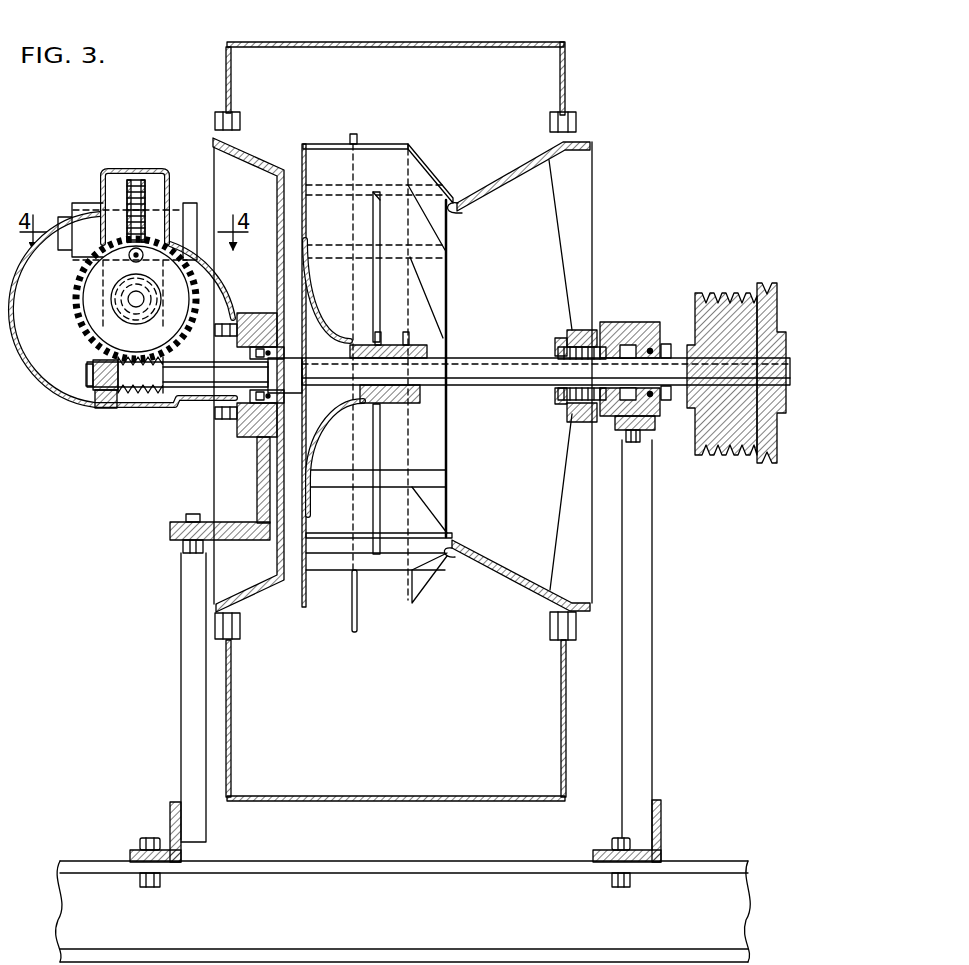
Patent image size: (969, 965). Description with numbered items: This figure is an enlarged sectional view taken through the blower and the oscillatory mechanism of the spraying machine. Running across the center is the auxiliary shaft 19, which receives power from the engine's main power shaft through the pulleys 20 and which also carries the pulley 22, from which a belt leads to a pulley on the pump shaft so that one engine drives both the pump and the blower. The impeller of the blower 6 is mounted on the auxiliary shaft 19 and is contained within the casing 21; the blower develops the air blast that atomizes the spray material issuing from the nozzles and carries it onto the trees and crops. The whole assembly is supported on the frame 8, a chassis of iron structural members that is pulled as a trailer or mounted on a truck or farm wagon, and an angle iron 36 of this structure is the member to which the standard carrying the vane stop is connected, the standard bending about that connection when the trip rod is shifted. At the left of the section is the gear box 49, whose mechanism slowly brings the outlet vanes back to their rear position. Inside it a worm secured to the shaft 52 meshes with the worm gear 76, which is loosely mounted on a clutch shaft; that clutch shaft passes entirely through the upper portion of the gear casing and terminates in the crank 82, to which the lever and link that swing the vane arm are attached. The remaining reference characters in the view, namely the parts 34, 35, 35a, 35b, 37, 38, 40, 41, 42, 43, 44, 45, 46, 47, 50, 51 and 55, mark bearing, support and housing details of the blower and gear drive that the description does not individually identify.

The blower 6 is at (564, 44).
The frame 8 is at (560, 871).
The auxiliary shaft 19 is at (526, 372).
The pulleys 20 is at (713, 293).
The casing 21 is at (566, 89).
The pulley 22 is at (767, 284).
The bearing 34 is at (246, 314).
The support bracket 35 is at (170, 532).
The hub plate 35a is at (430, 353).
The hub plate 35b is at (427, 341).
The angle iron 36 is at (170, 816).
The inlet ring 37 is at (325, 313).
The fan housing wall 38 is at (301, 168).
The inlet flange 40 is at (458, 199).
The lower cone 41 is at (517, 576).
The outer cone 42 is at (586, 218).
The bearing collar 43 is at (592, 329).
The spacer collar 44 is at (561, 337).
The left cone 45 is at (245, 150).
The bearing housing 46 is at (275, 316).
The chamber 47 is at (530, 248).
The gear box 49 is at (126, 171).
The worm gear 50 is at (76, 292).
The worm 51 is at (150, 393).
The shaft 52 is at (137, 302).
The pointer 55 is at (126, 251).
The worm gear 76 is at (141, 186).
The crank 82 is at (195, 203).